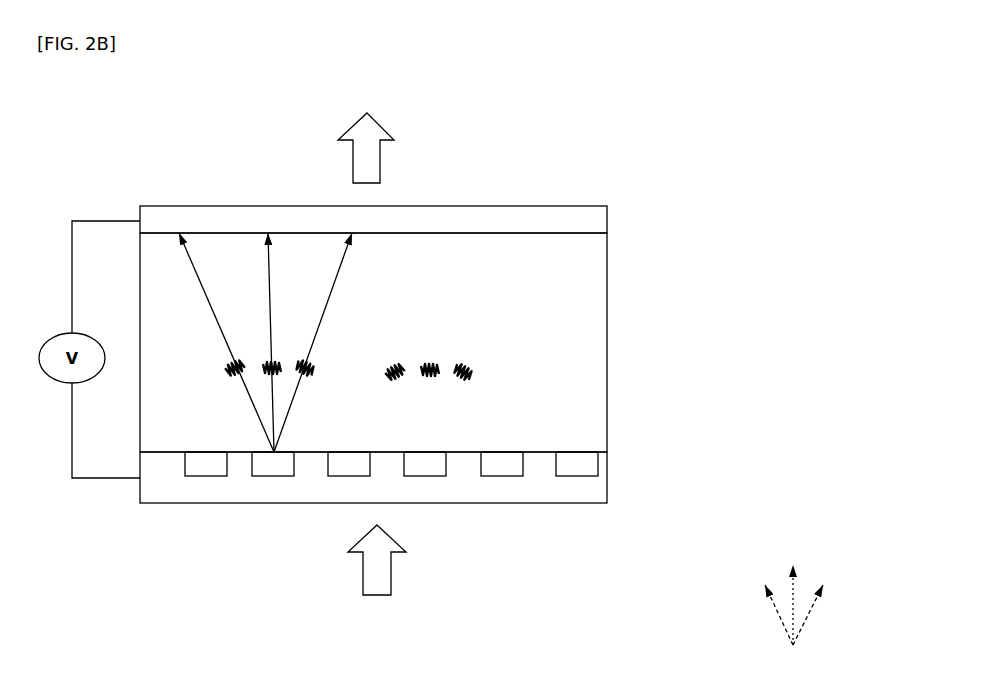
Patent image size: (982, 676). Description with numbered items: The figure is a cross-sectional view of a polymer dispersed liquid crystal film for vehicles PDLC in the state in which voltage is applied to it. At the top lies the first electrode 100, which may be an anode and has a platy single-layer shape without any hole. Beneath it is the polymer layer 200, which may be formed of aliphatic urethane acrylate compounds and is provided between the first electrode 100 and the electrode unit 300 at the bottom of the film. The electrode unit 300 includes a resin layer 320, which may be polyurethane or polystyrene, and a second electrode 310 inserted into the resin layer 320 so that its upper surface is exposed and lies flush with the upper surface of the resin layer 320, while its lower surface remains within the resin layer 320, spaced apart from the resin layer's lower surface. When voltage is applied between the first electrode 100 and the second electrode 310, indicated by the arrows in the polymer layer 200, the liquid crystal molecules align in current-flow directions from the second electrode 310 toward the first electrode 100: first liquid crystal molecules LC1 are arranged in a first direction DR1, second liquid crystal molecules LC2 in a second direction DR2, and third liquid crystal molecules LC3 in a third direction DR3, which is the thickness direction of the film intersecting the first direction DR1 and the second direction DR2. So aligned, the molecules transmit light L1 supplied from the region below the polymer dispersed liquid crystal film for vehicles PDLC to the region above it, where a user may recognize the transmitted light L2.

The first electrode 100 is at (595, 224).
The polymer layer 200 is at (585, 360).
The electrode unit 300 is at (437, 477).
The second electrode 310 is at (592, 465).
The resin layer 320 is at (600, 490).
The first liquid crystal molecules LC1 is at (387, 375).
The second liquid crystal molecules LC2 is at (472, 376).
The third liquid crystal molecules LC3 is at (437, 361).
The polymer dispersed liquid crystal film for vehicles PDLC is at (578, 190).
The light L1 is at (377, 578).
The transmitted light L2 is at (366, 135).
The first direction DR1 is at (761, 605).
The second direction DR2 is at (825, 605).
The third direction DR3 is at (793, 591).